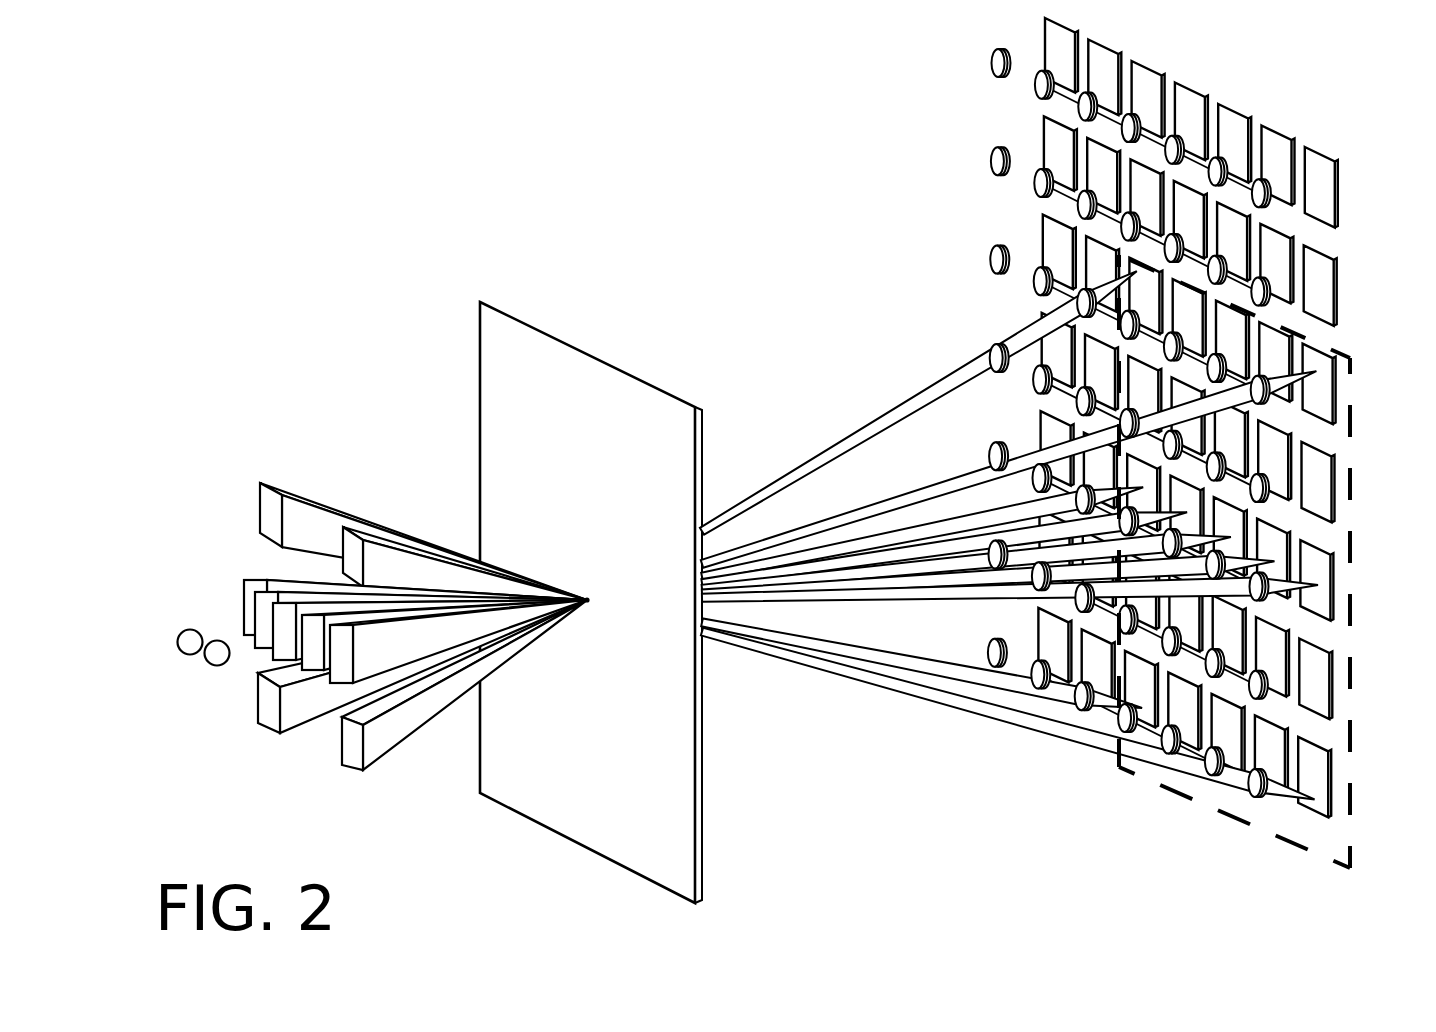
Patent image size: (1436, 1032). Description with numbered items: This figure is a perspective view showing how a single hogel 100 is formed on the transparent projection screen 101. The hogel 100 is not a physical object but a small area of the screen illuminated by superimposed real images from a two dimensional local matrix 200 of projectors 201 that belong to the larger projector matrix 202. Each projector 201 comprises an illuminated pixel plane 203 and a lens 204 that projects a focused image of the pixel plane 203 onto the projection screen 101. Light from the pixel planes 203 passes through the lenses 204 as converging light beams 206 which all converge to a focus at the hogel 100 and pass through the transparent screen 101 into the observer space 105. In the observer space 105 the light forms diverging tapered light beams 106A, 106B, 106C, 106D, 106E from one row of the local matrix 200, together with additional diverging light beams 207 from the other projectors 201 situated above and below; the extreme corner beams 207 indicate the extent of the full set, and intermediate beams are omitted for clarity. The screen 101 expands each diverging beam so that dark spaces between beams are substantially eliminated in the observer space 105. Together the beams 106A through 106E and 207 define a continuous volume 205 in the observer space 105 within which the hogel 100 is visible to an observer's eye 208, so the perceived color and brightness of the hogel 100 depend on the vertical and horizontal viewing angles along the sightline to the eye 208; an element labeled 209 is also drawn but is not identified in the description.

The hogel 100 is at (684, 698).
The transparent projection screen 101 is at (591, 582).
The observer space 105 is at (346, 620).
The diverging tapered light beam 106A is at (343, 647).
The diverging tapered light beam 106B is at (312, 638).
The diverging tapered light beam 106C is at (287, 630).
The diverging tapered light beam 106D is at (263, 623).
The diverging tapered light beam 106E is at (250, 617).
The local matrix 200 is at (1234, 575).
The projector 201 is at (1226, 417).
The projector matrix 202 is at (975, 107).
The illuminated pixel plane 203 is at (1357, 580).
The lens 204 is at (1332, 620).
The continuous volume 205 is at (404, 566).
The converging light beam 206 is at (1043, 463).
The diverging light beam 207 is at (404, 632).
The observer's eye 208 is at (182, 632).
The light source 209 is at (208, 662).